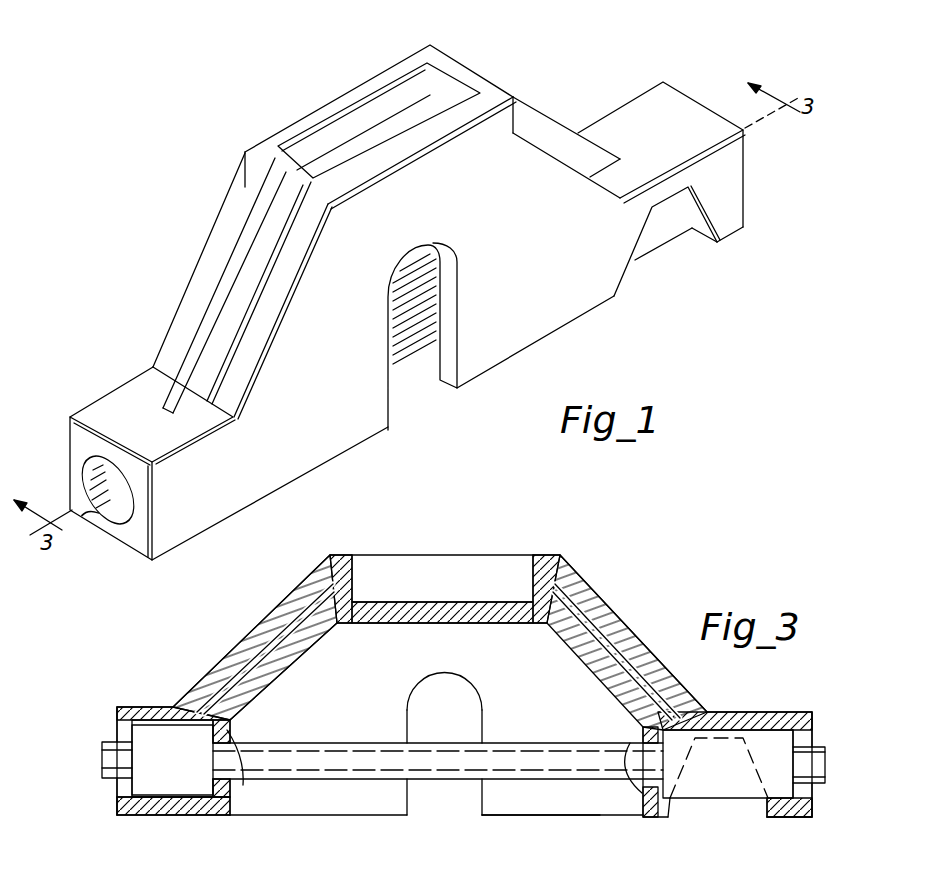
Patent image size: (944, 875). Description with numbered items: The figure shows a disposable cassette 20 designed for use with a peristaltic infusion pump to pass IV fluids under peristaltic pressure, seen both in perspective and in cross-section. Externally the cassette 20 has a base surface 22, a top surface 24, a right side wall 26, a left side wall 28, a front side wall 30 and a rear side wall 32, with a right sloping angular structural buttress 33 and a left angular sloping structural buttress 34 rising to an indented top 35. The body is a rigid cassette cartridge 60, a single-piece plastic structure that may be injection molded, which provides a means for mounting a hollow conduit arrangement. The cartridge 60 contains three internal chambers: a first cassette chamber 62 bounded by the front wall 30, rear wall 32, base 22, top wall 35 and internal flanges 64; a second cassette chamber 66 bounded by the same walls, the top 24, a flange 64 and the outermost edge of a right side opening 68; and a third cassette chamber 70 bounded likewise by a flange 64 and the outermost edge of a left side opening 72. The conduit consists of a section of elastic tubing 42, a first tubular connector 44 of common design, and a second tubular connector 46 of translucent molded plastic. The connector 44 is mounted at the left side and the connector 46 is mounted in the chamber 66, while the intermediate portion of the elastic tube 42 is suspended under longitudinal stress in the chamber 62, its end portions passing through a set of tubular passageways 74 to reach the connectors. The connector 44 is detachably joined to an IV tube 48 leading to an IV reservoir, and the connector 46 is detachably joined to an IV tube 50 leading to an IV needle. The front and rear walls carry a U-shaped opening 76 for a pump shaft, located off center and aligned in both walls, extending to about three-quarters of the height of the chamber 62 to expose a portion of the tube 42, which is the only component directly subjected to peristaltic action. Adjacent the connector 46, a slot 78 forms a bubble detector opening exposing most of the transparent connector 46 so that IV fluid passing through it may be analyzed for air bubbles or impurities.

In FIG. 1, the disposable cassette 20 is at (335, 90).
In FIG. 3, the disposable cassette 20 is at (429, 550).
In FIG. 1, the base surface 22 is at (337, 458).
In FIG. 3, the base surface 22 is at (359, 817).
In FIG. 1, the top surface 24 is at (118, 400).
In FIG. 3, the top surface 24 is at (540, 554).
In FIG. 3, the right side wall 26 is at (815, 796).
In FIG. 1, the left side wall 28 is at (135, 545).
In FIG. 3, the left side wall 28 is at (113, 793).
In FIG. 1, the front side wall 30 is at (272, 417).
In FIG. 1, the rear side wall 32 is at (222, 233).
In FIG. 3, the rear side wall 32 is at (534, 817).
In FIG. 1, the right sloping angular structural buttress 33 is at (533, 120).
In FIG. 3, the right sloping angular structural buttress 33 is at (641, 638).
In FIG. 1, the left angular sloping structural buttress 34 is at (270, 250).
In FIG. 3, the left angular sloping structural buttress 34 is at (247, 643).
In FIG. 1, the indented top 35 is at (423, 124).
In FIG. 3, the indented top 35 is at (452, 601).
In FIG. 1, the elastic tubing 42 is at (418, 343).
In FIG. 3, the elastic tubing 42 is at (442, 750).
In FIG. 3, the first tubular connector 44 is at (185, 772).
In FIG. 1, the second tubular connector 46 is at (653, 238).
In FIG. 3, the second tubular connector 46 is at (723, 788).
In FIG. 3, the IV tube 48 is at (102, 760).
In FIG. 3, the IV tube 50 is at (826, 767).
In FIG. 3, the cassette cartridge 60 is at (310, 594).
In FIG. 3, the first cassette chamber 62 is at (455, 658).
In FIG. 3, the internal flanges 64 is at (233, 734).
In FIG. 3, the second cassette chamber 66 is at (796, 818).
In FIG. 3, the right side opening 68 is at (815, 737).
In FIG. 3, the third cassette chamber 70 is at (123, 814).
In FIG. 1, the left side opening 72 is at (72, 460).
In FIG. 3, the left side opening 72 is at (117, 729).
In FIG. 3, the tubular passageways 74 is at (434, 765).
In FIG. 1, the U-shaped opening 76 is at (428, 383).
In FIG. 3, the U-shaped opening 76 is at (452, 812).
In FIG. 1, the slot 78 is at (690, 240).
In FIG. 3, the slot 78 is at (753, 812).